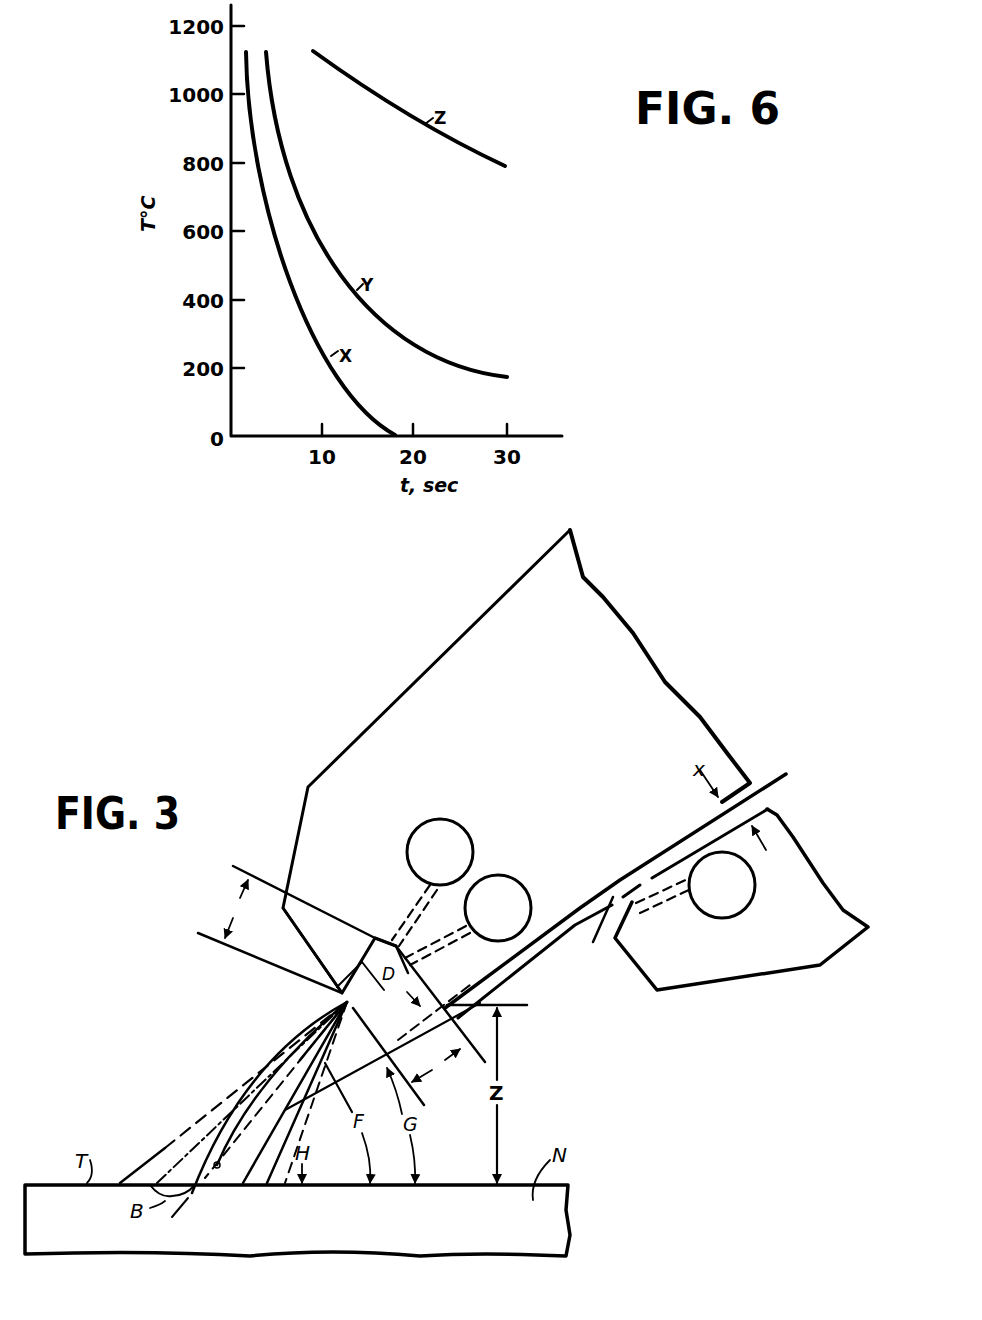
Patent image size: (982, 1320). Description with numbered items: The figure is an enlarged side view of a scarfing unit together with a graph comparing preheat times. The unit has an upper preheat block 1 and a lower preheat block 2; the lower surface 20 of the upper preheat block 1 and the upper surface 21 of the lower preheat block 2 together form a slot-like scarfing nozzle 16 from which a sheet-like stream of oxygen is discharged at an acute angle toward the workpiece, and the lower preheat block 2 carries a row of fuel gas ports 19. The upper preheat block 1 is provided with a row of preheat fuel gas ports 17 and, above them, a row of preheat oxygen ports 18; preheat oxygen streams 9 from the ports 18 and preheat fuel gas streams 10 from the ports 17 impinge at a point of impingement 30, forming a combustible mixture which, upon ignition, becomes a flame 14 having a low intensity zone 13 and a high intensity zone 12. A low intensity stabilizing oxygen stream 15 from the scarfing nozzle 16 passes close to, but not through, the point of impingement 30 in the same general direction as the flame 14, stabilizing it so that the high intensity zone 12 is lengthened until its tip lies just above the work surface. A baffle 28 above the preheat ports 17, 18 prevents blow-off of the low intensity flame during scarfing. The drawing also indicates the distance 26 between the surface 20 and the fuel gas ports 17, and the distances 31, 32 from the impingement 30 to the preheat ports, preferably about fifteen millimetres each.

The upper preheat block 1 is at (383, 720).
The lower preheat block 2 is at (708, 968).
The preheat oxygen streams 9 is at (370, 963).
The preheat fuel gas streams 10 is at (378, 1010).
The high intensity zone 12 is at (253, 1090).
The low intensity zone 13 is at (181, 1143).
The flame 14 is at (263, 1050).
The stabilizing oxygen stream 15 is at (523, 961).
The scarfing nozzle 16 is at (598, 932).
The preheat fuel gas ports 17 is at (414, 960).
The preheat oxygen ports 18 is at (388, 943).
The fuel gas ports 19 is at (594, 942).
The lower surface of the upper preheat block 20 is at (630, 870).
The upper surface of the lower preheat block 21 is at (214, 1187).
The distance between surface and preheat fuel gas ports 26 is at (381, 985).
The baffle 28 is at (308, 946).
The point of impingement 30 is at (340, 1002).
The distance from impingement to preheat ports 31 is at (286, 929).
The distance from impingement to preheat ports 32 is at (436, 1065).